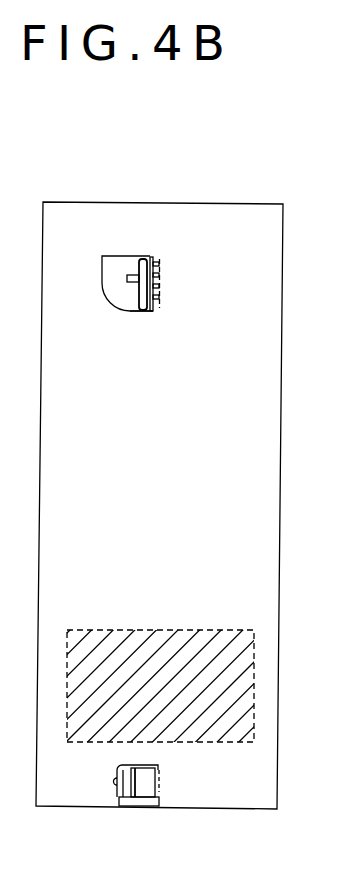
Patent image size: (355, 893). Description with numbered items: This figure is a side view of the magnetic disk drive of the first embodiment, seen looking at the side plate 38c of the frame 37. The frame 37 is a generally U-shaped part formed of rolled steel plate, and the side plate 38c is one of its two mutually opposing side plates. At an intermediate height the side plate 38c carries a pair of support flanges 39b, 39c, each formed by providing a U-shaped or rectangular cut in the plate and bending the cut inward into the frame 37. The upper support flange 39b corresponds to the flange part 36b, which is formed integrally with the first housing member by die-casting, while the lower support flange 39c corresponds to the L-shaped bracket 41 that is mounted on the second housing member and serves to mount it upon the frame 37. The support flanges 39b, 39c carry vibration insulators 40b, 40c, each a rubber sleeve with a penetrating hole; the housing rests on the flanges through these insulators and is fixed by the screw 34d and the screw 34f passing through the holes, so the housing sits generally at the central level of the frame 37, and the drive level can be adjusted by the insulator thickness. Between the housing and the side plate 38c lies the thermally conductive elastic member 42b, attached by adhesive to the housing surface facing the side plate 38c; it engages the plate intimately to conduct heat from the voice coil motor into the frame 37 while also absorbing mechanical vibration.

The frame 37 is at (67, 198).
The side plate 38c is at (250, 232).
The vibration insulator 40b is at (150, 257).
The support flange 39b is at (152, 255).
The screw 34d is at (130, 279).
The flange part 36b is at (137, 306).
The thermally conductive elastic member 42b is at (253, 673).
The screw 34f is at (116, 781).
The vibration insulator 40c is at (141, 790).
The L-shaped bracket 41 is at (118, 799).
The support flange 39c is at (157, 798).